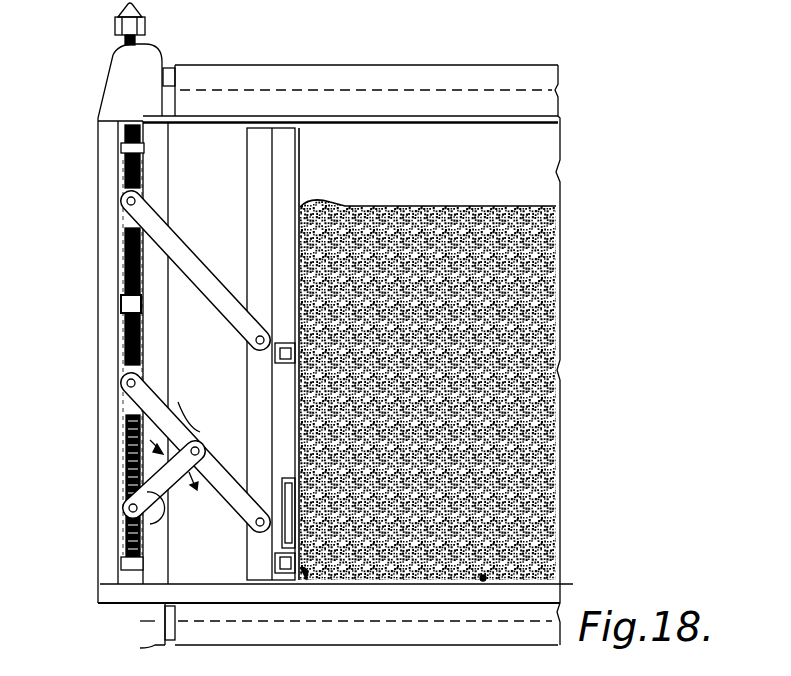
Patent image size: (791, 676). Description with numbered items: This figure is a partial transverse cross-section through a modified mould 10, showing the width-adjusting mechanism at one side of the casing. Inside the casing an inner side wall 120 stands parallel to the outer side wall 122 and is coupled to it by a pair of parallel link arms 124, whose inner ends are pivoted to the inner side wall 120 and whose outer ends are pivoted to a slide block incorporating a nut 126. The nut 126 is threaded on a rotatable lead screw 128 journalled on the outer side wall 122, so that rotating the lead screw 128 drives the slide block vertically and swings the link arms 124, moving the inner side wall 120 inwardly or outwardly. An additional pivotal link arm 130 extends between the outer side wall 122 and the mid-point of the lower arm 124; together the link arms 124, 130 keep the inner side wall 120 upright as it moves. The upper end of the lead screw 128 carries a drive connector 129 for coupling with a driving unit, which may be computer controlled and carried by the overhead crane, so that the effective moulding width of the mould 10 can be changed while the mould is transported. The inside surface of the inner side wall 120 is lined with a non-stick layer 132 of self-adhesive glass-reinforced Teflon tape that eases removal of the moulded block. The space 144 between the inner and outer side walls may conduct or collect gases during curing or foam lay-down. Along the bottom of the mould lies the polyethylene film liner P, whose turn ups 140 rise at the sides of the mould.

The mould 10 is at (258, 60).
The inner side wall 120 is at (248, 143).
The outer side wall 122 is at (118, 177).
The parallel link arms 124 is at (193, 265).
The nut 126 is at (120, 300).
The lead screw 128 is at (125, 452).
The drive connector 129 is at (118, 14).
The additional pivotal link arm 130 is at (130, 527).
The non-stick layer 132 is at (302, 181).
The turn ups 140 is at (302, 568).
The spaces 144 is at (180, 327).
The polyethylene film liner P is at (486, 580).